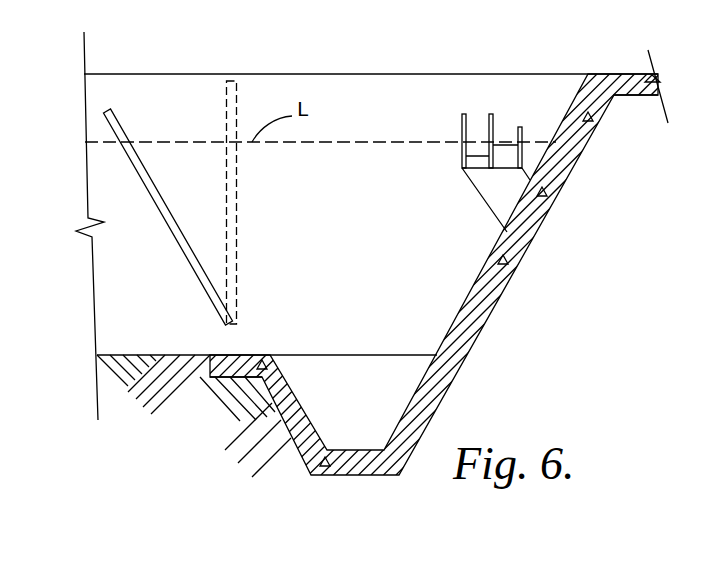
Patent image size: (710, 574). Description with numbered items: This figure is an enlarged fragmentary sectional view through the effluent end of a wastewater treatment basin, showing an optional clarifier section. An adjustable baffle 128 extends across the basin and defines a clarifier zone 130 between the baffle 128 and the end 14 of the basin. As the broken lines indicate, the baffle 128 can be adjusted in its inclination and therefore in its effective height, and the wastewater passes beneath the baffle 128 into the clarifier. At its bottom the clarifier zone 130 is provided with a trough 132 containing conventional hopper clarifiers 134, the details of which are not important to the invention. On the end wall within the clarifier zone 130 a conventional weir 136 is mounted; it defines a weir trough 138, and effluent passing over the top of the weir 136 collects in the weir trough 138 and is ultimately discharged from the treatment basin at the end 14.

The end of the basin 14 is at (623, 75).
The adjustable baffle 128 is at (180, 246).
The clarifier zone 130 is at (376, 262).
The trough 132 is at (398, 378).
The hopper clarifiers 134 is at (324, 370).
The weir 136 is at (503, 98).
The weir trough 138 is at (530, 162).